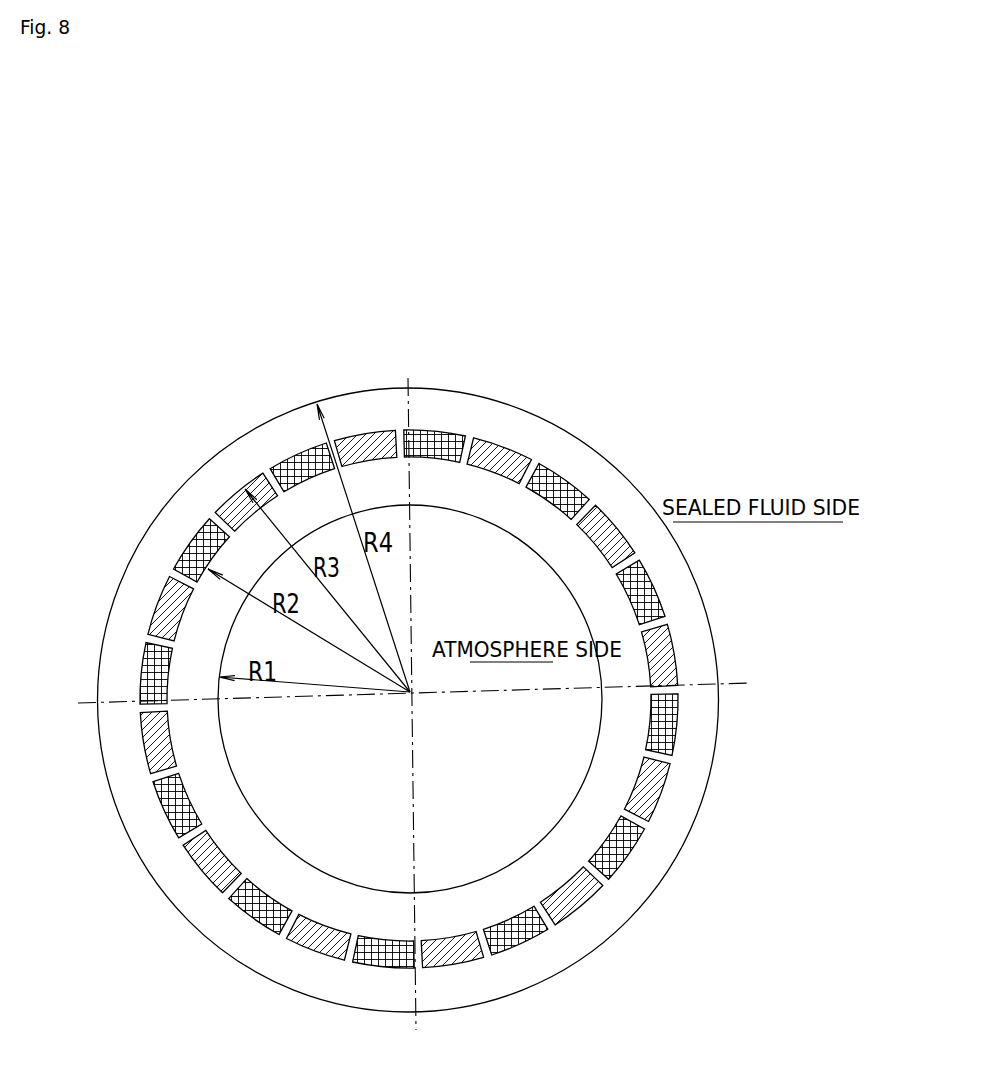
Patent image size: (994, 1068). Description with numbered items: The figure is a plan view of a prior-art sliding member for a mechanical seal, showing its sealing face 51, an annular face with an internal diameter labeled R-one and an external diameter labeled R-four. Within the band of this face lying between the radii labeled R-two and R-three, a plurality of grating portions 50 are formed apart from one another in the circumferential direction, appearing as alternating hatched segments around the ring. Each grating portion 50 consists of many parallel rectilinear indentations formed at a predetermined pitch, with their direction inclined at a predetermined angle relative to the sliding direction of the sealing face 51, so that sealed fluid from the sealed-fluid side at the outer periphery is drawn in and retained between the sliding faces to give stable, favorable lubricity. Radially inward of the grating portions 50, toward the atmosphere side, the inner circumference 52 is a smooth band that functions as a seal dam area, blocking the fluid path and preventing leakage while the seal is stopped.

The grating portions 50 is at (512, 452).
The sealing face 51 is at (388, 407).
The inner circumference 52 is at (492, 502).